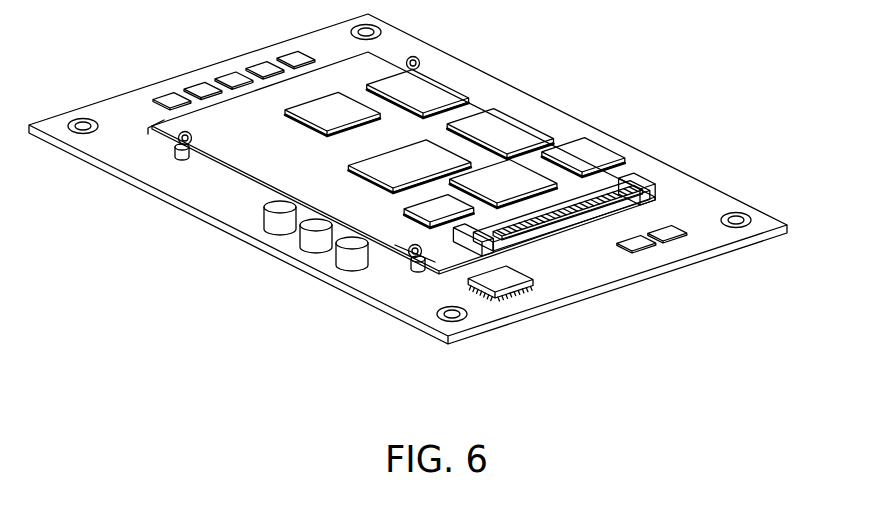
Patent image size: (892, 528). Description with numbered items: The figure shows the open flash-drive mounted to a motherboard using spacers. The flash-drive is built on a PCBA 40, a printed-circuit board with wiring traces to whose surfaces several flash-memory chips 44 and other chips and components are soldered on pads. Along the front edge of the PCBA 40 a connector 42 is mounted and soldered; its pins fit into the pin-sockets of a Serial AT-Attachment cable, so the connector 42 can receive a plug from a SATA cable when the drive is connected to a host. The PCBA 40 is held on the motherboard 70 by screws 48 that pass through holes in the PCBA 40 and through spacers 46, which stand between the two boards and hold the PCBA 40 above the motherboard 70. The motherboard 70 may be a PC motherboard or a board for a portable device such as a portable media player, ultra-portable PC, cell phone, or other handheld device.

The motherboard 70 is at (141, 144).
The PCBA 40 is at (322, 190).
The flash-memory chips 44 is at (341, 131).
The connector 42 is at (527, 230).
The spacers 46 is at (182, 158).
The screws 48 is at (185, 136).